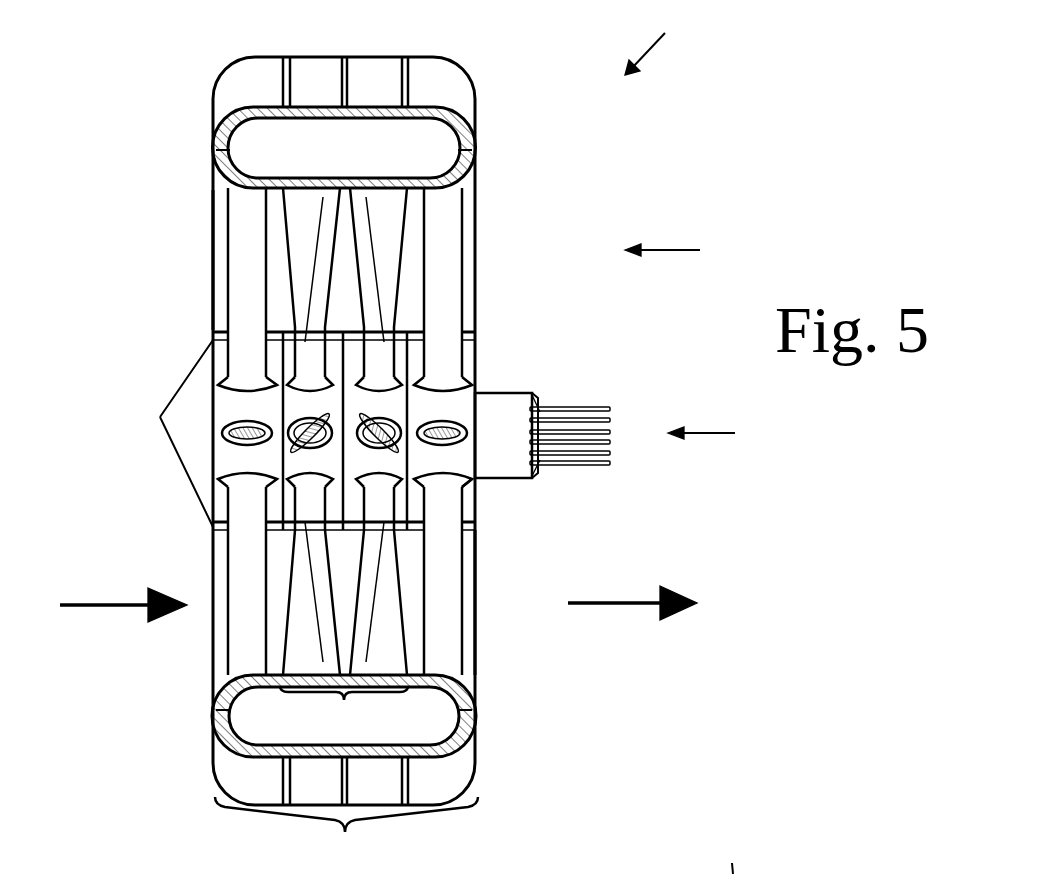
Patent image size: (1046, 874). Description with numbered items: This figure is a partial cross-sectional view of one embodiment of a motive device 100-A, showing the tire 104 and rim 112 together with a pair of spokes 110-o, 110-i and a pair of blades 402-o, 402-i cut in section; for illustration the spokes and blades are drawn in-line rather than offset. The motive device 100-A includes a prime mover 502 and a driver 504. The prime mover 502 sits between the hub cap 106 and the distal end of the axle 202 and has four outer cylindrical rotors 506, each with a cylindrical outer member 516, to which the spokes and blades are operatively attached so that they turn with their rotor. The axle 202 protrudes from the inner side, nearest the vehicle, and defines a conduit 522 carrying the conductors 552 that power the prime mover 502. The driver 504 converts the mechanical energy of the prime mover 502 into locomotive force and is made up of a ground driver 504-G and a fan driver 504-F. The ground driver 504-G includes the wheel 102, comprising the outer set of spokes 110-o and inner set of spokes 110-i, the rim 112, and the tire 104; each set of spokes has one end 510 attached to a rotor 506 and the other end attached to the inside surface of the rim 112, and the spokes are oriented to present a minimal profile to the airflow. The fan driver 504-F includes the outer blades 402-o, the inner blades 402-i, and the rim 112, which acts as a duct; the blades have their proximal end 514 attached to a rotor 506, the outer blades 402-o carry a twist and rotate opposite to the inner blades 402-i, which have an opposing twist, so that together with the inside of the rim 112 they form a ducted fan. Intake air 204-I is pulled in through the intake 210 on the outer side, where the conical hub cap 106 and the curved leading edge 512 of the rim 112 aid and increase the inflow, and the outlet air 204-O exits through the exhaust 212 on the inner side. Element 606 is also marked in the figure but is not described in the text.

The motive device 100-A is at (682, 39).
The wheel 102 is at (475, 212).
The tire 104 is at (475, 97).
The hub cap 106 is at (180, 385).
The outer set of spokes 110-o is at (226, 293).
The inner set of spokes 110-i is at (468, 285).
The rim 112 is at (475, 157).
The axle 202 is at (502, 390).
The intake air 204-I is at (102, 607).
The outlet air 204-O is at (613, 605).
The intake 210 is at (213, 242).
The exhaust 212 is at (477, 645).
The outer blades 402-o is at (285, 598).
The inner blades 402-i is at (403, 623).
The prime mover 502 is at (878, 873).
The driver 504 is at (689, 250).
The fan driver 504-F is at (344, 713).
The ground driver 504-G is at (346, 835).
The rotor 506 is at (213, 480).
The end of spokes 510 is at (477, 490).
The leading edge of the rim 512 is at (213, 184).
The proximal end of blades 514 is at (395, 502).
The outer member of rotor 516 is at (213, 448).
The conduit 522 is at (538, 470).
The conductors 552 is at (598, 407).
The sensor element 606 is at (734, 853).